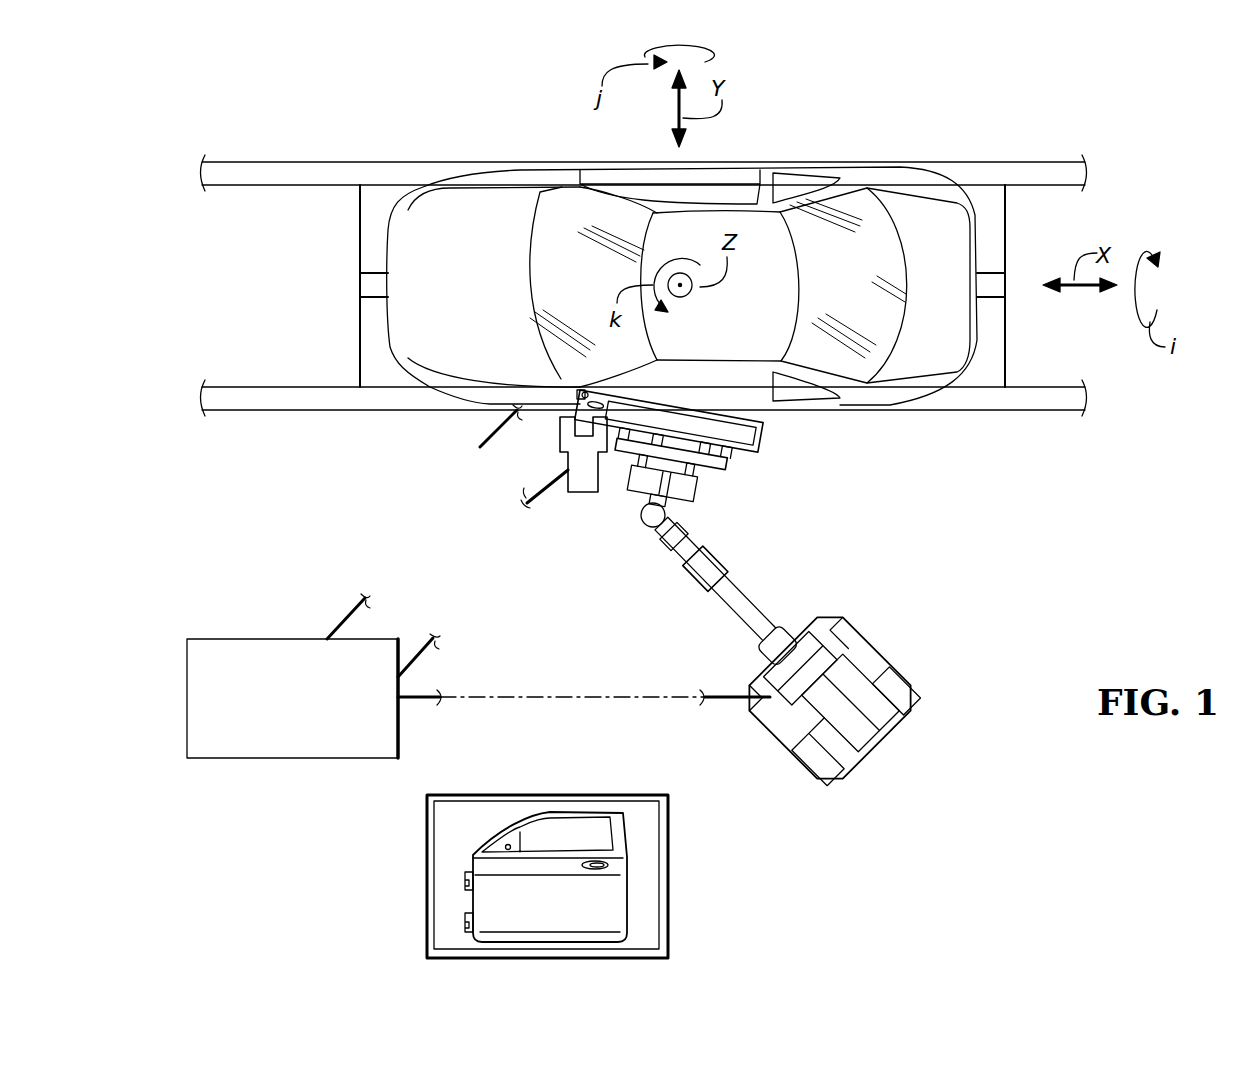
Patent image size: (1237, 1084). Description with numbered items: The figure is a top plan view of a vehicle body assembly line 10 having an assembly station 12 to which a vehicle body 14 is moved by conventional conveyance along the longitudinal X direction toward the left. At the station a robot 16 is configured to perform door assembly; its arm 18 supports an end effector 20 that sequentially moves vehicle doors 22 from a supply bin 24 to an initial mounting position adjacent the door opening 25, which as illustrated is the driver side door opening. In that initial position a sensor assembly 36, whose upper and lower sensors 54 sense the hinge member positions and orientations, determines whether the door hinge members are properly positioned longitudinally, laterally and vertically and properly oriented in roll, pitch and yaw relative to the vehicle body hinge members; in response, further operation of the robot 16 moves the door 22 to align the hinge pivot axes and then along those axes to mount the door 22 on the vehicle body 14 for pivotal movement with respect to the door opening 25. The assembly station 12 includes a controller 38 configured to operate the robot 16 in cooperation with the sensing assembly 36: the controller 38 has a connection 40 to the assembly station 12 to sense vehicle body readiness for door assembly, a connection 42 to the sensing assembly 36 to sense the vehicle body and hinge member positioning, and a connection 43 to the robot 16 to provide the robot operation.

The vehicle body assembly line 10 is at (637, 316).
The assembly station 12 is at (336, 418).
The vehicle body 14 is at (682, 280).
The robot 16 is at (791, 609).
The arm 18 is at (720, 605).
The end effector 20 is at (707, 490).
The vehicle door 22 is at (760, 452).
The supply bin 24 is at (670, 870).
The door opening 25 is at (732, 196).
The sensor assembly 36 is at (546, 440).
The controller 38 is at (257, 628).
The connection 40 is at (484, 432).
The connection 42 is at (552, 498).
The connection 43 is at (420, 702).
The sensor 54 is at (598, 420).